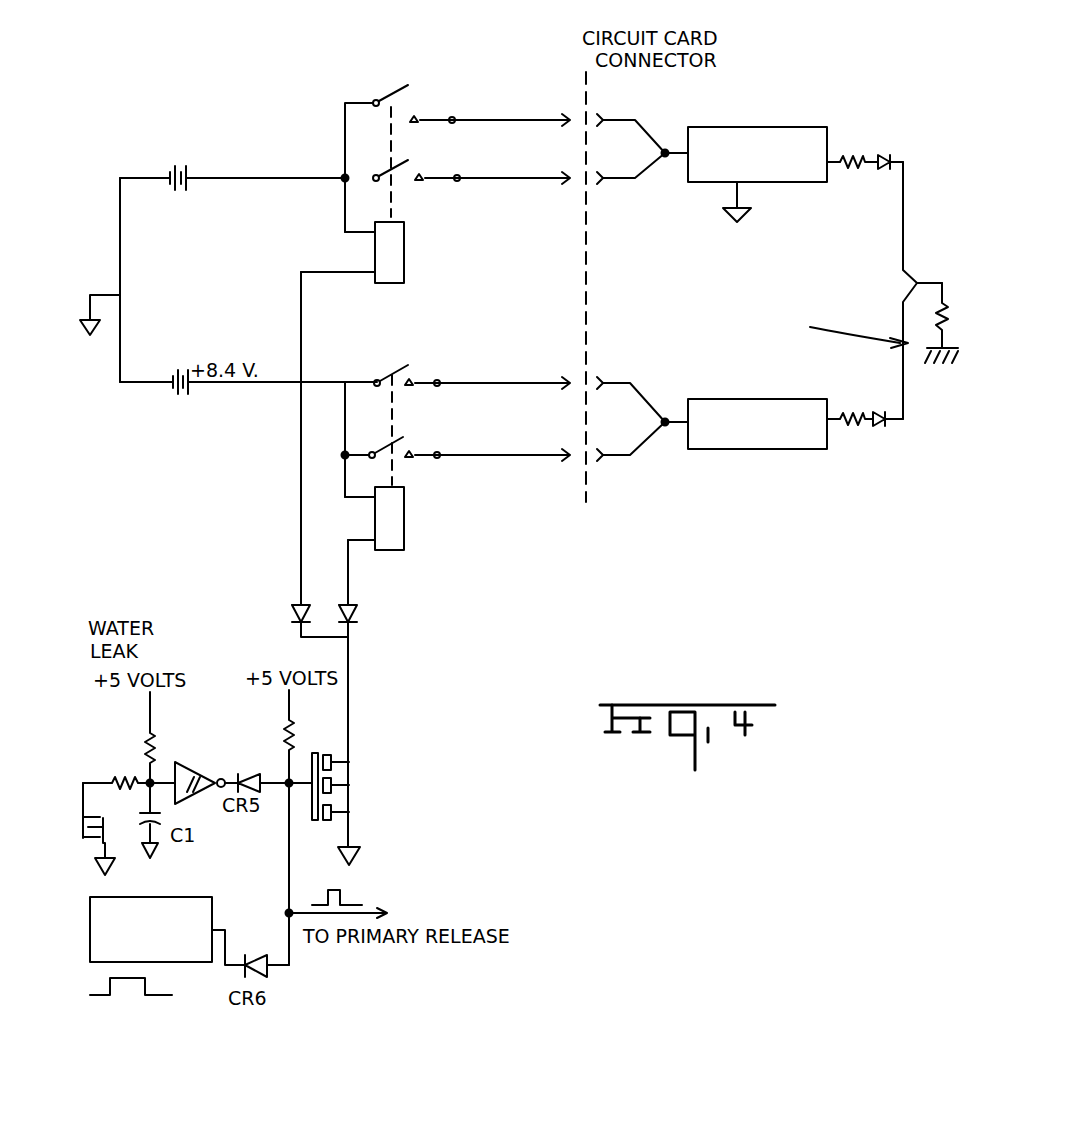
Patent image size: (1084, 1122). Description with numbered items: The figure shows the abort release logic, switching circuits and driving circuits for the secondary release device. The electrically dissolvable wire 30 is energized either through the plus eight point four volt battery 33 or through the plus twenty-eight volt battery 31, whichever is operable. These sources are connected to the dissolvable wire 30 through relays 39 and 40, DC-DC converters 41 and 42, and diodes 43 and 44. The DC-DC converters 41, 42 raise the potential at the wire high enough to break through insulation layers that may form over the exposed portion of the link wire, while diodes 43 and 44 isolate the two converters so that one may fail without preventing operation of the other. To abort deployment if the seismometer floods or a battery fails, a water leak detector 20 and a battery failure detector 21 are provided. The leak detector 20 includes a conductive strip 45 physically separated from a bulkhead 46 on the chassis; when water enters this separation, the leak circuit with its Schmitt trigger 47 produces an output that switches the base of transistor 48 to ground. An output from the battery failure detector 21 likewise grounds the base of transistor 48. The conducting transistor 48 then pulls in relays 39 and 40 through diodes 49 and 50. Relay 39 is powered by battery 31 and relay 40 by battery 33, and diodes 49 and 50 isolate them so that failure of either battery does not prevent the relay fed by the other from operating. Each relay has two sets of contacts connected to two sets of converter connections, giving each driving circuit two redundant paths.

The water leak detector 20 is at (108, 811).
The battery failure detector 21 is at (200, 897).
The electrically dissolvable wire 30 is at (943, 310).
The +28 volt battery 31 is at (176, 164).
The +8.4 volt battery 33 is at (181, 372).
The relay 39 is at (438, 213).
The relay 40 is at (446, 483).
The DC-DC converter 41 is at (732, 127).
The DC-DC converter 42 is at (720, 399).
The diode 43 is at (883, 157).
The diode 44 is at (878, 428).
The conductive strip 45 is at (83, 826).
The bulkhead 46 is at (101, 837).
The Schmitt trigger 47 is at (190, 772).
The transistor 48 is at (313, 753).
The diode 49 is at (290, 614).
The diode 50 is at (358, 617).